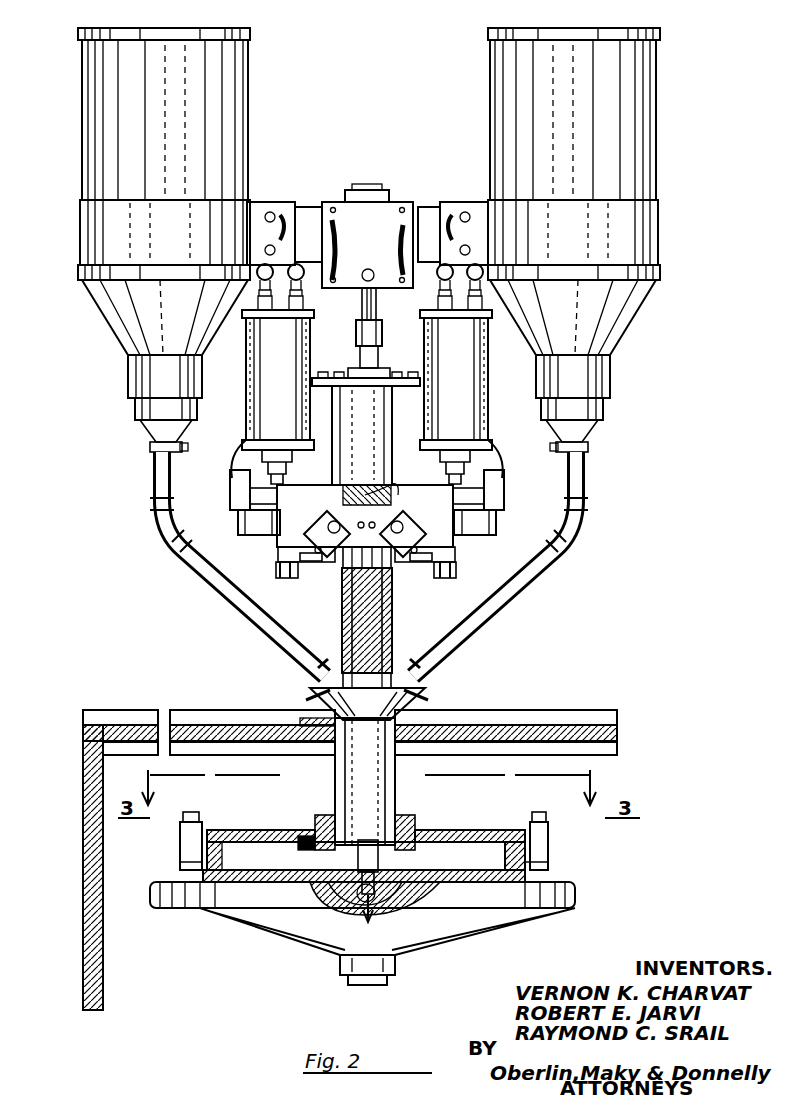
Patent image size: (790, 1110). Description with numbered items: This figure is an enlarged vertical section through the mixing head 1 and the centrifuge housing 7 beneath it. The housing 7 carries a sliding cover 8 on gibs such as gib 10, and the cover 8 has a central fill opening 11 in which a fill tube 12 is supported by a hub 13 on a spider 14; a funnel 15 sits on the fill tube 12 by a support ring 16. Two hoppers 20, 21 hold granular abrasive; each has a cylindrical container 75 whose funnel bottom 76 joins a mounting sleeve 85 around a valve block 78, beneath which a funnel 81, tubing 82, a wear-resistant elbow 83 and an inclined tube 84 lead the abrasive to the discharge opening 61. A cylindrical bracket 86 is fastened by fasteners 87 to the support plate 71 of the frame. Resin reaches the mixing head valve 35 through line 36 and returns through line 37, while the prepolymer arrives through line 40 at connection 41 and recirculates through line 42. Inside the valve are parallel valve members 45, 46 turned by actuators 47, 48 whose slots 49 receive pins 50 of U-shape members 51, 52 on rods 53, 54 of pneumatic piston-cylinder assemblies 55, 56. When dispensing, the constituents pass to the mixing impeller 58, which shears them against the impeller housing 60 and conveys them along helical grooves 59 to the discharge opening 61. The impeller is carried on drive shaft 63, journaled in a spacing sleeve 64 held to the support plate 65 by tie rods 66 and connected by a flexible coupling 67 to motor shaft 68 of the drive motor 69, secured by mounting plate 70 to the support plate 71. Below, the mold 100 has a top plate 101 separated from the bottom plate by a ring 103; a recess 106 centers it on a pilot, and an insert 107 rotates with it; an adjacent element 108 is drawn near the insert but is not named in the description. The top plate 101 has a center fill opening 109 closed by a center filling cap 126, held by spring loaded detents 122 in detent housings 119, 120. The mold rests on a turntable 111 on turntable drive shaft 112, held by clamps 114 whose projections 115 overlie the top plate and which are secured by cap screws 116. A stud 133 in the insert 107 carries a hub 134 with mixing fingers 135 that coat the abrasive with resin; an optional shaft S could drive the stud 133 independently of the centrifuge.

The mixing head 1 is at (558, 496).
The centrifuge housing 7 is at (83, 887).
The sliding cover 8 is at (618, 738).
The gib 10 is at (560, 720).
The central fill opening 11 is at (432, 732).
The fill tube 12 is at (396, 790).
The hub 13 is at (336, 742).
The spider 14 is at (292, 722).
The funnel 15 is at (410, 716).
The support ring 16 is at (308, 714).
The hopper 20 is at (230, 125).
The hopper 21 is at (648, 125).
The mixing head valve 35 is at (320, 490).
The line 36 is at (500, 475).
The line 37 is at (496, 522).
The line 40 is at (236, 475).
The connection 41 is at (230, 489).
The line 42 is at (238, 520).
The valve member 45 is at (315, 524).
The valve member 46 is at (410, 528).
The actuator 47 is at (346, 568).
The actuator 48 is at (395, 563).
The slot 49 is at (412, 542).
The pin 50 is at (316, 561).
The U-shape member 51 is at (292, 563).
The U-shape member 52 is at (440, 565).
The rod 53 is at (278, 545).
The rod 54 is at (454, 545).
The pneumatic piston-cylinder assembly 55 is at (250, 383).
The pneumatic piston-cylinder assembly 56 is at (490, 385).
The mixing impeller 58 is at (392, 614).
The helical grooves 59 is at (392, 637).
The impeller housing 60 is at (342, 632).
The discharge opening 61 is at (350, 708).
The drive shaft 63 is at (378, 362).
The spacing sleeve 64 is at (392, 422).
The support plate 65 is at (420, 382).
The tie rods 66 is at (332, 408).
The flexible coupling 67 is at (382, 336).
The motor shaft 68 is at (362, 312).
The drive motor 69 is at (376, 186).
The mounting plate 70 is at (412, 207).
The support plate 71 is at (306, 207).
The cylindrical container 75 is at (80, 152).
The funnel bottom 76 is at (120, 322).
The valve block 78 is at (135, 409).
The funnel 81 is at (150, 443).
The tubing 82 is at (221, 564).
The elbow 83 is at (168, 538).
The inclined tube 84 is at (246, 606).
The mounting sleeve 85 is at (128, 377).
The cylindrical bracket 86 is at (82, 236).
The fasteners 87 is at (270, 212).
The mold 100 is at (514, 812).
The top plate 101 is at (460, 842).
The ring 103 is at (215, 855).
The recess 106 is at (340, 905).
The insert 107 is at (377, 898).
The valve stem end 108 is at (360, 905).
The center fill opening 109 is at (410, 850).
The turntable 111 is at (522, 910).
The turntable drive shaft 112 is at (378, 984).
The clamps 114 is at (525, 855).
The projections 115 is at (200, 830).
The cap screws 116 is at (548, 824).
The detent housing 119 is at (412, 830).
The detent housing 120 is at (300, 836).
The spring loaded detents 122 is at (290, 846).
The center filling cap 126 is at (325, 815).
The stud 133 is at (300, 888).
The hub 134 is at (368, 840).
The mixing fingers 135 is at (362, 852).
The shaft S is at (370, 922).